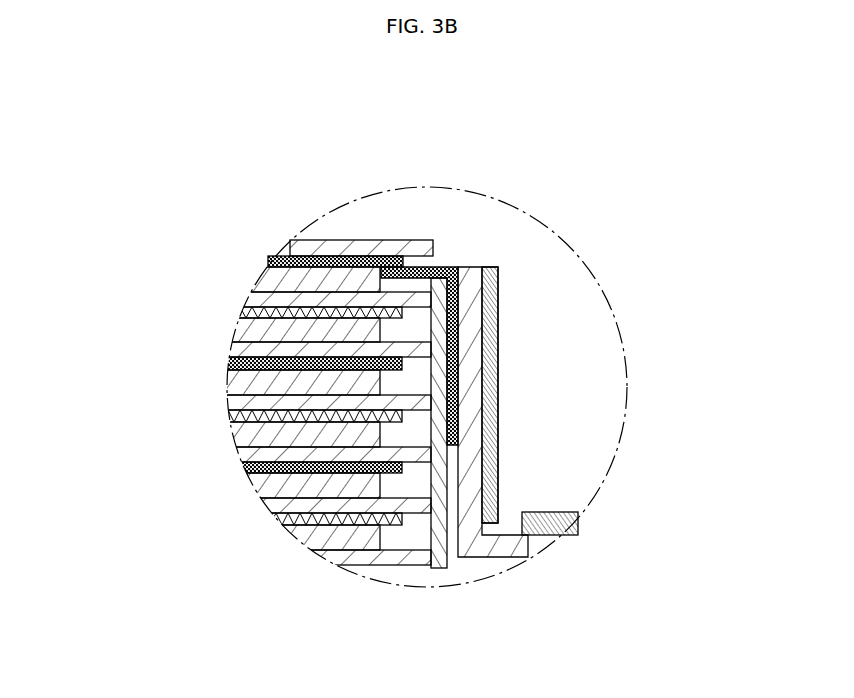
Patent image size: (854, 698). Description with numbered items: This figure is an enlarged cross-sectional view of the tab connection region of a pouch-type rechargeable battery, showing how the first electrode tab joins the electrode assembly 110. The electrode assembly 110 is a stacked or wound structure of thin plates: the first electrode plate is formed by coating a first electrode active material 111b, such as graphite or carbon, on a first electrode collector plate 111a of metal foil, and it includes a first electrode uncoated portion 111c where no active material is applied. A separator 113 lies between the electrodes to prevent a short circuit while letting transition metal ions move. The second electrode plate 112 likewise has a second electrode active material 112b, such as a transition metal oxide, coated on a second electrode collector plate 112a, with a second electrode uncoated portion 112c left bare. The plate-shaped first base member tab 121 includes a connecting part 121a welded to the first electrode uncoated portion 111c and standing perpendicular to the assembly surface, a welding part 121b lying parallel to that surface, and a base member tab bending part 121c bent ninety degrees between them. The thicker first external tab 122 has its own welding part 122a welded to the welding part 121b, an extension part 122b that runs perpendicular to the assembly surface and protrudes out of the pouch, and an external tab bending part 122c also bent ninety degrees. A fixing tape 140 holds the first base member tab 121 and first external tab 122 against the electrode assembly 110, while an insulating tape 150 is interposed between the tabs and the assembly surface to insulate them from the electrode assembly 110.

The electrode assembly 110 is at (280, 134).
The first electrode collector plate 111a is at (353, 251).
The first electrode active material 111b is at (321, 272).
The first electrode uncoated portion 111c is at (394, 262).
The separator 113 is at (287, 246).
The second electrode plate 112 is at (113, 387).
The second electrode collector plate 112a is at (280, 420).
The second electrode active material 112b is at (268, 432).
The second electrode uncoated portion 112c is at (360, 475).
The first base member tab 121 is at (728, 213).
The connecting part 121a is at (437, 258).
The welding part 121b is at (450, 320).
The base member tab bending part 121c is at (458, 265).
The fixing tape 140 is at (500, 357).
The first external tab 122 is at (728, 387).
The welding part 122a is at (463, 397).
The extension part 122b is at (510, 545).
The external tab bending part 122c is at (491, 505).
The insulating tape 150 is at (437, 562).